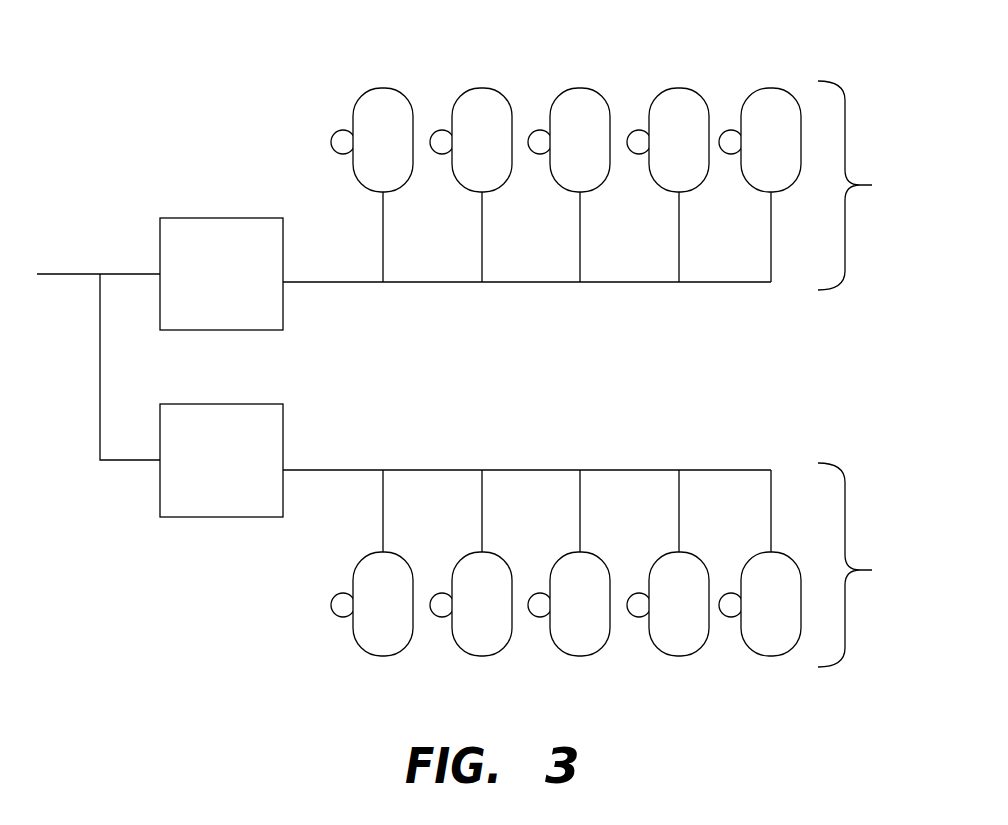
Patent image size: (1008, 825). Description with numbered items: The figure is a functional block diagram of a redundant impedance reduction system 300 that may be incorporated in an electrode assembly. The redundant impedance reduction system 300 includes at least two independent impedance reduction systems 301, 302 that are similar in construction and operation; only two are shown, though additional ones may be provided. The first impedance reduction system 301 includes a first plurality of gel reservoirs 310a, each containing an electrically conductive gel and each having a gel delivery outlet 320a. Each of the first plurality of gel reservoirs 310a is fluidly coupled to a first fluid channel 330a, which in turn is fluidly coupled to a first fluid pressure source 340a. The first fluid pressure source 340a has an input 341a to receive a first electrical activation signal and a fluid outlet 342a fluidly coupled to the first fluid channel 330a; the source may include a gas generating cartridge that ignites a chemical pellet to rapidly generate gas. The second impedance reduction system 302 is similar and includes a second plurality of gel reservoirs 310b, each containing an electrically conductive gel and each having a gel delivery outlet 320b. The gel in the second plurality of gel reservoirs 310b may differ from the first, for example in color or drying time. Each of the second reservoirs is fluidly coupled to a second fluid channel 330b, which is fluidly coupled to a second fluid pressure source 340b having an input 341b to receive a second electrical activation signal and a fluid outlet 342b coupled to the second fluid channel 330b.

The redundant impedance reduction system 300 is at (166, 63).
The first impedance reduction system 301 is at (867, 185).
The second impedance reduction system 302 is at (867, 565).
The first plurality of gel reservoirs 310a is at (767, 88).
The second plurality of gel reservoirs 310b is at (563, 657).
The gel delivery outlet 320a is at (340, 130).
The gel delivery outlet 320b is at (340, 618).
The first fluid channel 330a is at (513, 284).
The second fluid channel 330b is at (552, 470).
The first fluid pressure source 340a is at (240, 218).
The second fluid pressure source 340b is at (210, 517).
The input 341a is at (160, 268).
The input 341b is at (160, 462).
The fluid outlet 342a is at (284, 285).
The fluid outlet 342b is at (283, 470).